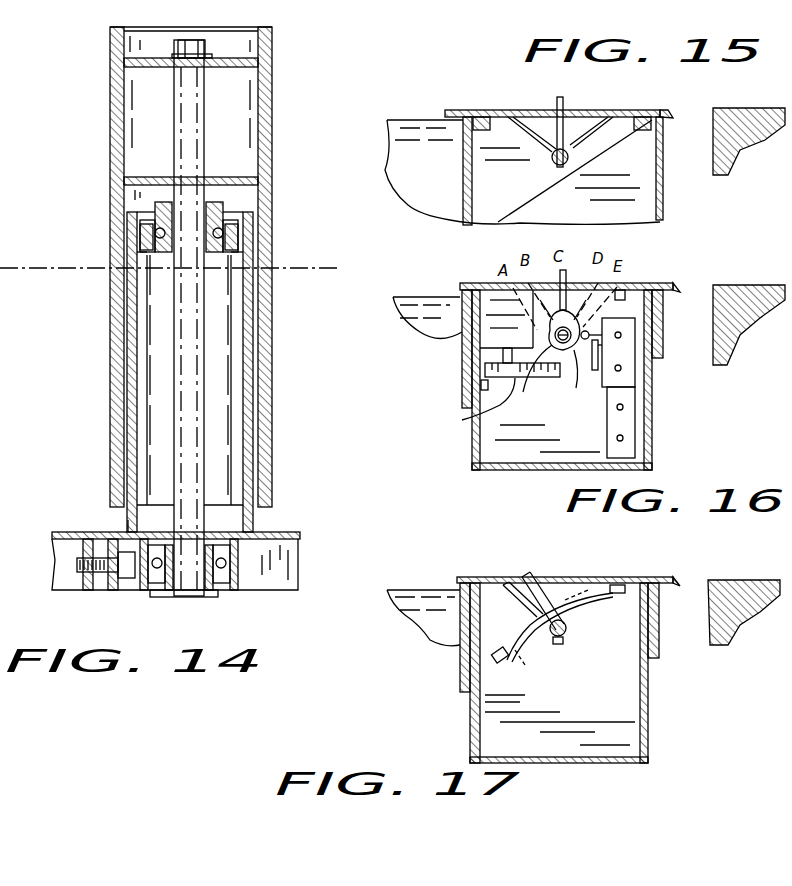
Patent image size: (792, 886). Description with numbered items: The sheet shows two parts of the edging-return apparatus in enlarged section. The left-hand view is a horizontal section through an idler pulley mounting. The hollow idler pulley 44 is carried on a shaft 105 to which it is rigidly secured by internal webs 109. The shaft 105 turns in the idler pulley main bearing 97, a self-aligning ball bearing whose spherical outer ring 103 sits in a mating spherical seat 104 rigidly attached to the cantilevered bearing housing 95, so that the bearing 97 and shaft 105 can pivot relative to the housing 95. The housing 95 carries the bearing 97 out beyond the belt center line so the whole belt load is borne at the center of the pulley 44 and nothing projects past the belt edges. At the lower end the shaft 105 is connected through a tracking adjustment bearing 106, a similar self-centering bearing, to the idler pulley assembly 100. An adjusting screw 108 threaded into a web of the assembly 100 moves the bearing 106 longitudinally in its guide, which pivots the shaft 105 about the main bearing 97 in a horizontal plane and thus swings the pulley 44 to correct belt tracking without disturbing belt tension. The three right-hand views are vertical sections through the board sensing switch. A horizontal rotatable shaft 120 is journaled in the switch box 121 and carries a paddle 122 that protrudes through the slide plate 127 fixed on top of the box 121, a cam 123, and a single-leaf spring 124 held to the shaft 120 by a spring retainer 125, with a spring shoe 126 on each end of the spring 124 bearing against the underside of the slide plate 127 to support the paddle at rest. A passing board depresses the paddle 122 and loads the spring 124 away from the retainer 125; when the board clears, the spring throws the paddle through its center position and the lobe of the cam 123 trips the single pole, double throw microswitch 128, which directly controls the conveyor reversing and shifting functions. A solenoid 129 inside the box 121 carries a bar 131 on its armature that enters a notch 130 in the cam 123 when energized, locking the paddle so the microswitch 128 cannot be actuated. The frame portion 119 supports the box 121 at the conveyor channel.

In FIG. 14, the idler pulley 44 is at (266, 495).
In FIG. 14, the cantilevered bearing housing 95 is at (126, 320).
In FIG. 14, the idler pulley main bearing 97 is at (150, 232).
In FIG. 14, the idler pulley assembly 100 is at (284, 582).
In FIG. 14, the spherical outer ring 103 is at (145, 240).
In FIG. 14, the spherical seat 104 is at (126, 212).
In FIG. 14, the shaft 105 is at (192, 387).
In FIG. 14, the tracking adjustment bearing 106 is at (146, 593).
In FIG. 14, the adjusting screw 108 is at (78, 564).
In FIG. 14, the internal web 109 is at (237, 68).
In FIG. 15, the frame member 119 is at (462, 186).
In FIG. 16, the frame member 119 is at (472, 455).
In FIG. 17, the frame member 119 is at (460, 668).
In FIG. 15, the rotatable shaft 120 is at (555, 165).
In FIG. 16, the rotatable shaft 120 is at (472, 334).
In FIG. 17, the rotatable shaft 120 is at (570, 630).
In FIG. 15, the switch box 121 is at (655, 208).
In FIG. 16, the switch box 121 is at (645, 430).
In FIG. 17, the switch box 121 is at (645, 728).
In FIG. 15, the paddle 122 is at (565, 102).
In FIG. 16, the paddle 122 is at (566, 268).
In FIG. 17, the paddle 122 is at (525, 575).
In FIG. 16, the cam 123 is at (578, 350).
In FIG. 17, the single-leaf spring 124 is at (518, 655).
In FIG. 17, the spring retainer 125 is at (515, 630).
In FIG. 17, the spring shoe 126 is at (628, 585).
In FIG. 15, the slide plate 127 is at (456, 112).
In FIG. 16, the slide plate 127 is at (455, 290).
In FIG. 17, the slide plate 127 is at (455, 583).
In FIG. 16, the microswitch 128 is at (625, 360).
In FIG. 16, the solenoid 129 is at (462, 322).
In FIG. 16, the notch 130 is at (548, 377).
In FIG. 16, the bar 131 is at (500, 408).